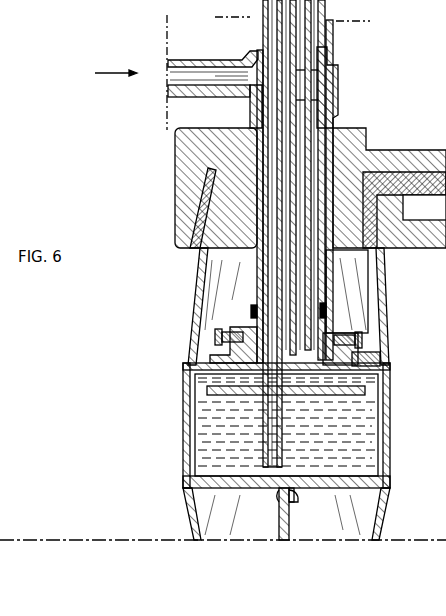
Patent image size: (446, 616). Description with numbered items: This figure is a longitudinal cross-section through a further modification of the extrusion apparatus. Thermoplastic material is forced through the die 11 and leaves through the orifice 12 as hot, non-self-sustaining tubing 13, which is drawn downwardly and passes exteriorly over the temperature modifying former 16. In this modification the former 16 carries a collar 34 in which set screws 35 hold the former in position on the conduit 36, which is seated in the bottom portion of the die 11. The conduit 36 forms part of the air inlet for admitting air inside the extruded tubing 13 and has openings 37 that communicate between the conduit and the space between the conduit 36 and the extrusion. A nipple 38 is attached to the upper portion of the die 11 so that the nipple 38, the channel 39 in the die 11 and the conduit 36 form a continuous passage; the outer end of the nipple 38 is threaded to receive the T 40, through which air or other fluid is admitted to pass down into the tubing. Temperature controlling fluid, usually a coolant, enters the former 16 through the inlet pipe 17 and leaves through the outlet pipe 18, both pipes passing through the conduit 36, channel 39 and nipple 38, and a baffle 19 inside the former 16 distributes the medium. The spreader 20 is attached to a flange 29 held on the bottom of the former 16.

The die 11 is at (185, 150).
The orifice 12 is at (190, 240).
The tubing 13 is at (196, 318).
The former 16 is at (389, 422).
The inlet pipe 17 is at (330, 46).
The outlet pipe 18 is at (257, 48).
The baffle 19 is at (212, 394).
The spreader 20 is at (281, 528).
The flange 29 is at (308, 490).
The collar 34 is at (368, 362).
The set screws 35 is at (216, 338).
The conduit 36 is at (327, 284).
The openings 37 is at (252, 314).
The nipple 38 is at (328, 130).
The channel 39 is at (268, 186).
The T 40 is at (337, 80).